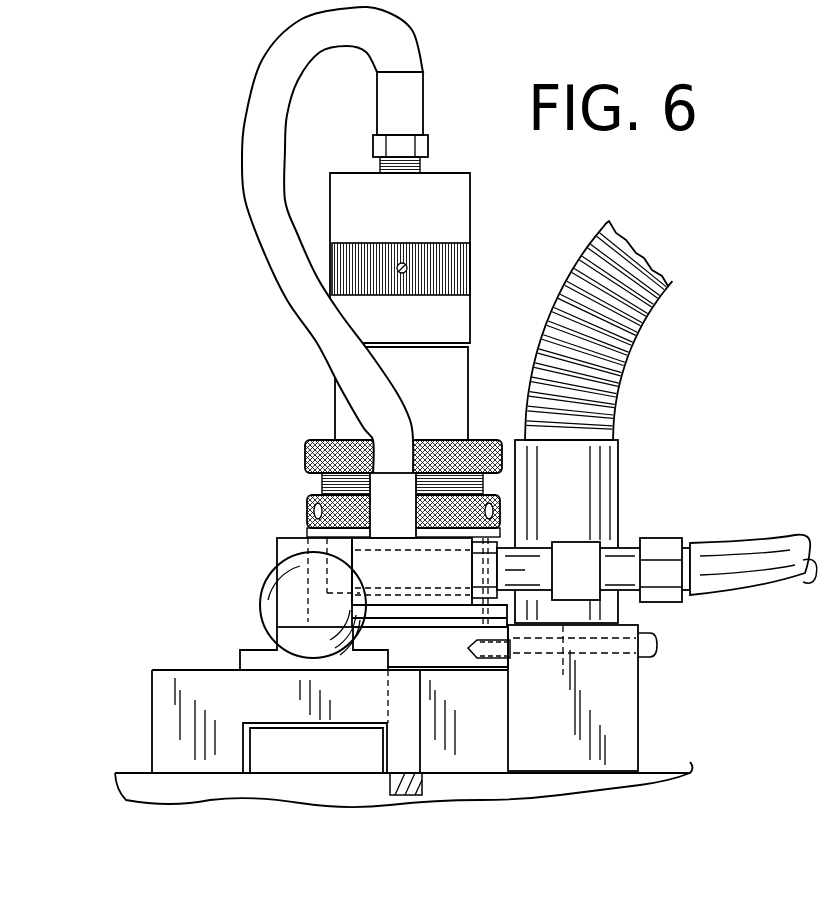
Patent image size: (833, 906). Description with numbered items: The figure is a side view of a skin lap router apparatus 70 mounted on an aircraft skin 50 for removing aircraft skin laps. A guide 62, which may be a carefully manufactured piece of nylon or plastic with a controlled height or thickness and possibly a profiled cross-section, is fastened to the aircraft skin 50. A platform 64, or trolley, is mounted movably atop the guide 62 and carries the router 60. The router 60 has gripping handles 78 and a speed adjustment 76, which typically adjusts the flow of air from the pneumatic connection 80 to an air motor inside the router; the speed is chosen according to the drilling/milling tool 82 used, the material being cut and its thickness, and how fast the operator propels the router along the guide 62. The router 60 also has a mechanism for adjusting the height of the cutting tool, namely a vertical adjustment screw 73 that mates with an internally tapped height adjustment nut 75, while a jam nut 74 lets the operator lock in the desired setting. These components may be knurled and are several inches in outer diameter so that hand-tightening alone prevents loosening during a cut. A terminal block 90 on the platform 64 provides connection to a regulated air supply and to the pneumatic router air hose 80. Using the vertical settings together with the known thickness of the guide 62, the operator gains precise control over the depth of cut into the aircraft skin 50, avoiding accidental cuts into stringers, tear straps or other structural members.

The aircraft skin 50 is at (657, 771).
The router 60 is at (580, 197).
The guide 62 is at (290, 747).
The platform 64 is at (218, 693).
The router apparatus 70 is at (702, 360).
The vertical adjustment screw 73 is at (306, 456).
The jam nut 74 is at (305, 530).
The height adjustment nut 75 is at (307, 532).
The speed adjustment 76 is at (457, 259).
The gripping handles 78 is at (266, 582).
The pneumatic connection 80 is at (411, 98).
The drilling/milling tool 82 is at (388, 784).
The terminal block 90 is at (451, 581).